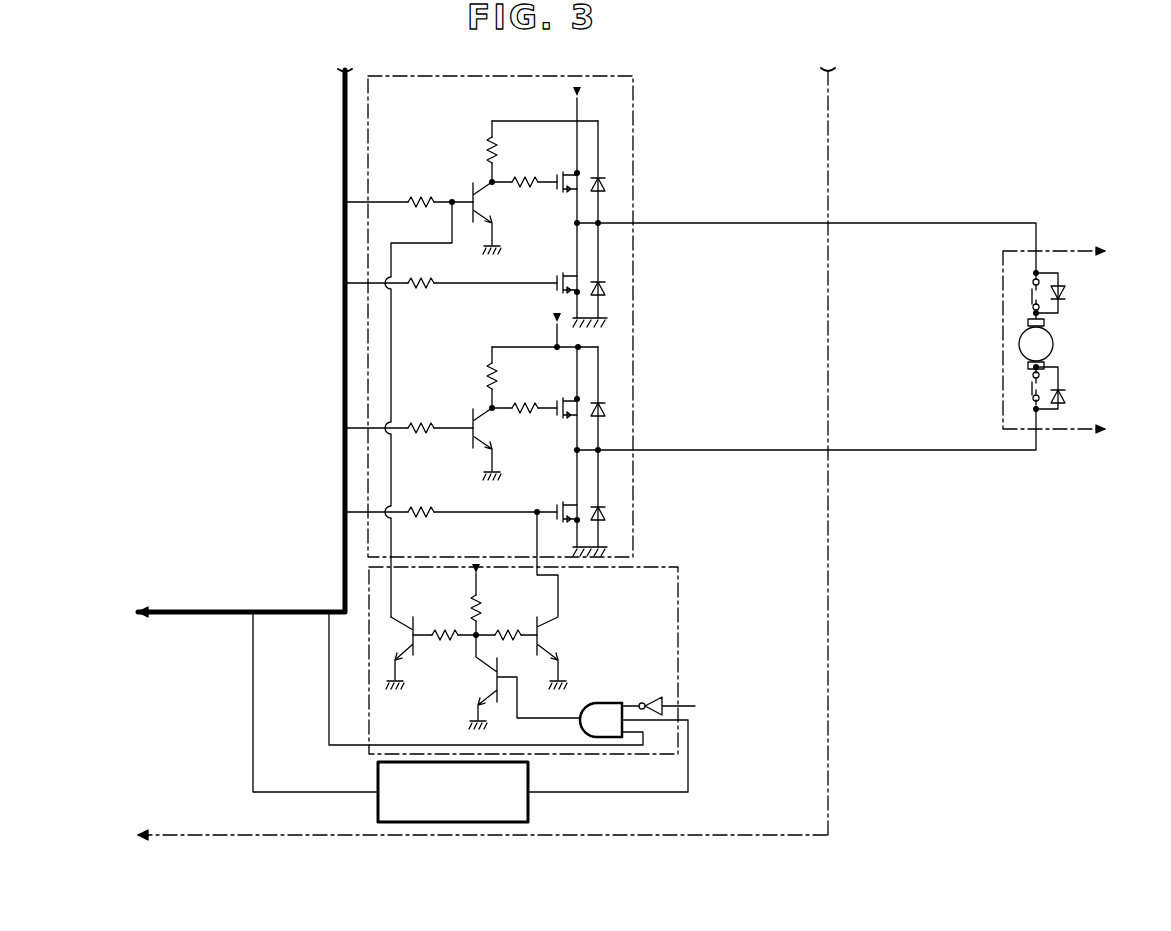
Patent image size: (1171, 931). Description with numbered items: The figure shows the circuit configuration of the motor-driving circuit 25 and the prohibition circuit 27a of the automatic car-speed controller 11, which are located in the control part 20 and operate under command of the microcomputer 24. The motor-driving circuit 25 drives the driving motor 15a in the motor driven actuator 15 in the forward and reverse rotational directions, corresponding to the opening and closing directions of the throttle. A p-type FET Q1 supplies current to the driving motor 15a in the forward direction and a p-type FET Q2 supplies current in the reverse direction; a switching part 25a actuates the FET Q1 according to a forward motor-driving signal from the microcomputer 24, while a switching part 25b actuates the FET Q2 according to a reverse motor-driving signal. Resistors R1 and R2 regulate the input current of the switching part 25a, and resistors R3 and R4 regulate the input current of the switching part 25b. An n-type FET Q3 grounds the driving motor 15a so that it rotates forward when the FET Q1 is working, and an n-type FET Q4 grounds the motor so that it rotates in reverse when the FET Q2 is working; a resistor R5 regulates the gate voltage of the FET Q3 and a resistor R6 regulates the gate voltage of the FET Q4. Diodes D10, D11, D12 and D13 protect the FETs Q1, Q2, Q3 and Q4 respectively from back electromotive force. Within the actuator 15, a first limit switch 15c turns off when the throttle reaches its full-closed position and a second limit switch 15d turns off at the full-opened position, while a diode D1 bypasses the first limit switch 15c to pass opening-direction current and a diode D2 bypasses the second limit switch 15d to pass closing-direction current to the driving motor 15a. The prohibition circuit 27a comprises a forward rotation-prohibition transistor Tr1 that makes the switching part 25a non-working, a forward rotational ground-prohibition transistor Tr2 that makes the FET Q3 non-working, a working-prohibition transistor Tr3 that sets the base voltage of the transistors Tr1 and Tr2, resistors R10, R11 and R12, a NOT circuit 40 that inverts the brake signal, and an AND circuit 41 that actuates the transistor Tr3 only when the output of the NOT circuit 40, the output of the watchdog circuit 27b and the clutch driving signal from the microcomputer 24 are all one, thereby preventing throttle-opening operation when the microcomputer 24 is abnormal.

The automatic car-speed controller 11 is at (843, 46).
The motor driven actuator 15 is at (1060, 251).
The driving motor 15a is at (1055, 344).
The first limit switch 15c is at (1028, 297).
The second limit switch 15d is at (1028, 394).
The diode D1 is at (1066, 293).
The diode D2 is at (1066, 392).
The control part 20 is at (828, 120).
The microcomputer 24 is at (205, 618).
The motor-driving circuit 25 is at (633, 76).
The switching part 25a is at (515, 352).
The switching part 25b is at (515, 434).
The resistor R1 is at (498, 150).
The resistor R2 is at (527, 188).
The resistor R3 is at (498, 378).
The resistor R4 is at (527, 414).
The resistor R5 is at (432, 506).
The resistor R6 is at (426, 289).
The p-type field effect transistor Q1 is at (559, 174).
The p-type field effect transistor Q2 is at (559, 401).
The n-type field effect transistor Q3 is at (558, 504).
The n-type field effect transistor Q4 is at (560, 272).
The diode D10 is at (604, 182).
The diode D11 is at (604, 407).
The diode D12 is at (604, 510).
The diode D13 is at (604, 285).
The prohibition circuit 27a is at (678, 612).
The watchdog circuit 27b is at (528, 812).
The forward rotation-prohibition transistor Tr1 is at (407, 655).
The forward rotational ground-prohibition transistor Tr2 is at (548, 645).
The working-prohibition transistor Tr3 is at (480, 712).
The resistor R10 is at (447, 641).
The resistor R11 is at (509, 634).
The resistor R12 is at (474, 608).
The NOT circuit 40 is at (662, 698).
The AND circuit 41 is at (609, 703).